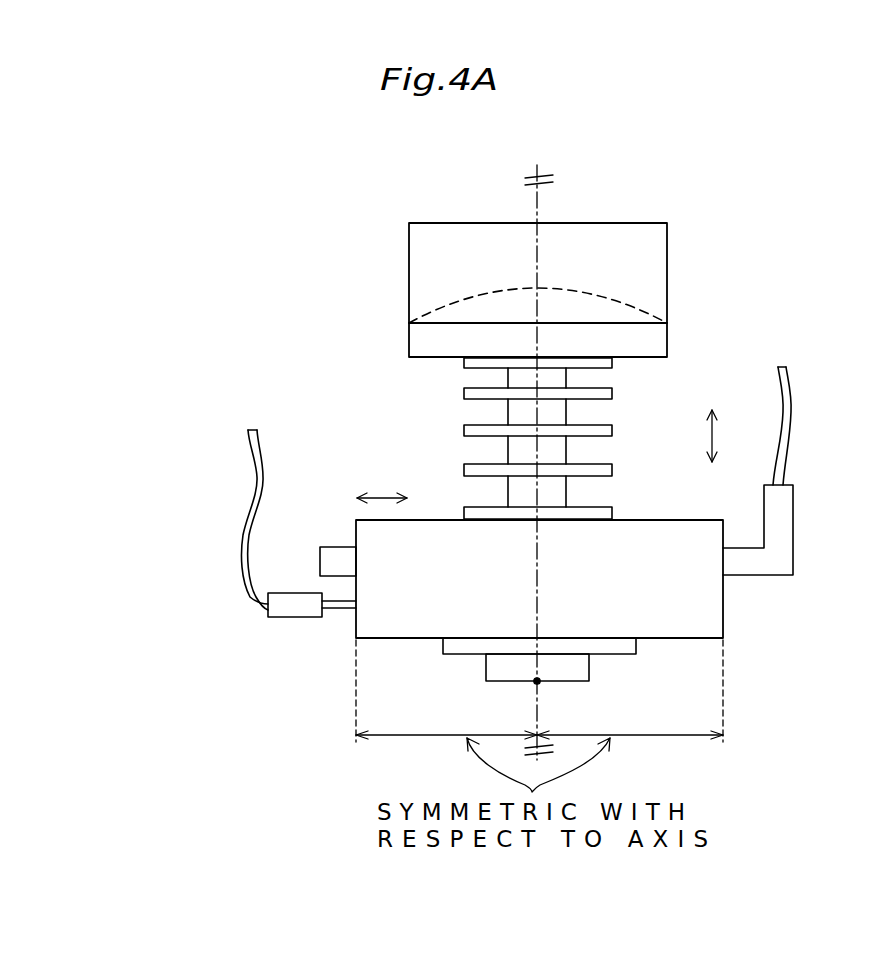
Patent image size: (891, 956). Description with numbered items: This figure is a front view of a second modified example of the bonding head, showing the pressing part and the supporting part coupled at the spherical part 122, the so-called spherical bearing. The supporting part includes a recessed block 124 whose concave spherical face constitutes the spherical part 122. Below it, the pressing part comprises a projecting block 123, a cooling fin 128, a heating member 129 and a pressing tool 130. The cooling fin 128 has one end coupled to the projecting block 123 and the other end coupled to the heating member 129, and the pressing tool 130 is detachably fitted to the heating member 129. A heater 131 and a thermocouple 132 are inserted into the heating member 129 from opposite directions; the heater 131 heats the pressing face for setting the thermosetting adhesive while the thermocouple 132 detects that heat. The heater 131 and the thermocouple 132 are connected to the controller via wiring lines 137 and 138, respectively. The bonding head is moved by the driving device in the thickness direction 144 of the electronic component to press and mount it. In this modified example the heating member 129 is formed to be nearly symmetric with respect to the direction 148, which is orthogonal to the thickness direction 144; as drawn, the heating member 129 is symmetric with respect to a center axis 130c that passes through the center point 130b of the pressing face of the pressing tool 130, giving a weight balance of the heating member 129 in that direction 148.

The spherical part 122 is at (617, 300).
The projecting block 123 is at (420, 339).
The recessed block 124 is at (420, 269).
The cooling fin 128 is at (463, 393).
The heating member 129 is at (382, 623).
The pressing tool 130 is at (580, 667).
The center point 130b is at (537, 683).
The center axis 130c is at (537, 210).
The heater 131 is at (767, 563).
The thermocouple 132 is at (338, 612).
The wiring line 137 is at (785, 460).
The wiring line 138 is at (249, 482).
The thickness direction 144 is at (712, 442).
The direction 148 is at (385, 495).